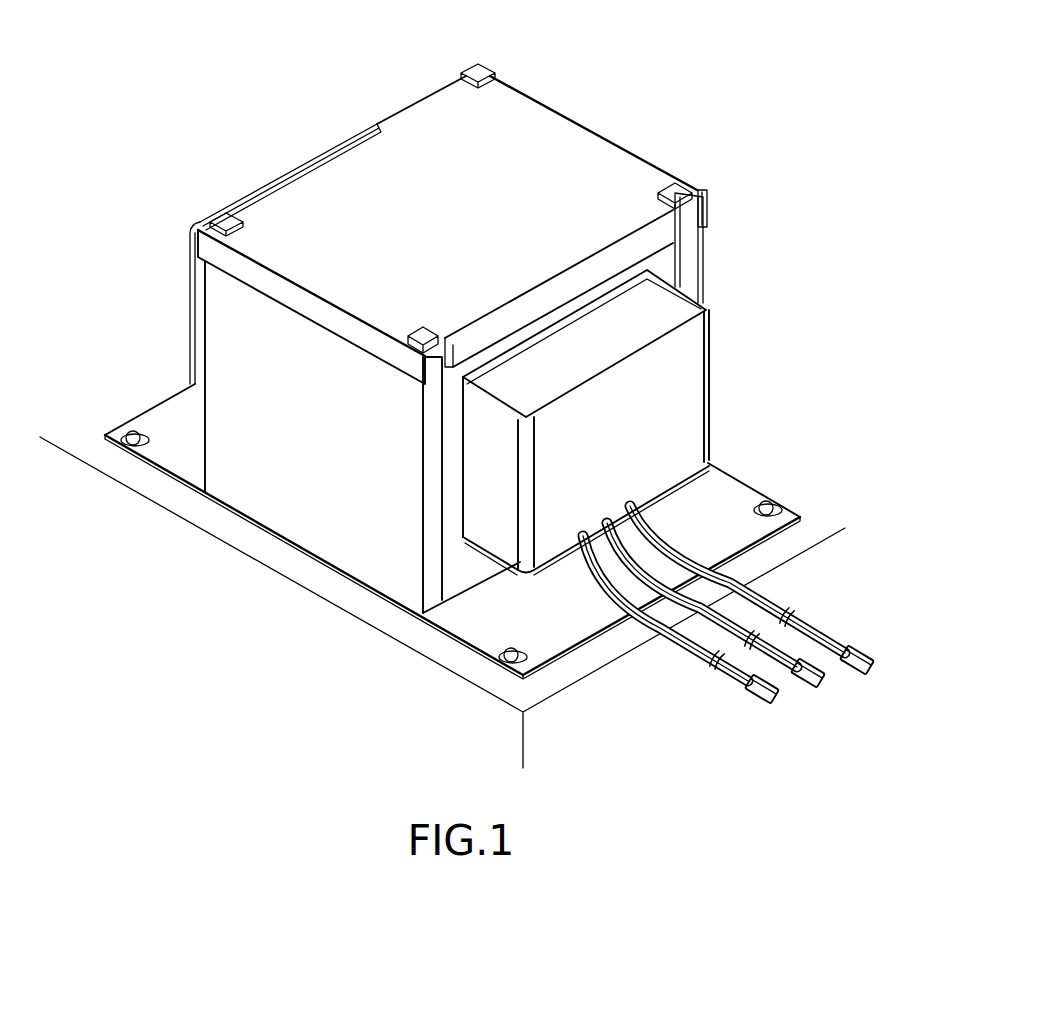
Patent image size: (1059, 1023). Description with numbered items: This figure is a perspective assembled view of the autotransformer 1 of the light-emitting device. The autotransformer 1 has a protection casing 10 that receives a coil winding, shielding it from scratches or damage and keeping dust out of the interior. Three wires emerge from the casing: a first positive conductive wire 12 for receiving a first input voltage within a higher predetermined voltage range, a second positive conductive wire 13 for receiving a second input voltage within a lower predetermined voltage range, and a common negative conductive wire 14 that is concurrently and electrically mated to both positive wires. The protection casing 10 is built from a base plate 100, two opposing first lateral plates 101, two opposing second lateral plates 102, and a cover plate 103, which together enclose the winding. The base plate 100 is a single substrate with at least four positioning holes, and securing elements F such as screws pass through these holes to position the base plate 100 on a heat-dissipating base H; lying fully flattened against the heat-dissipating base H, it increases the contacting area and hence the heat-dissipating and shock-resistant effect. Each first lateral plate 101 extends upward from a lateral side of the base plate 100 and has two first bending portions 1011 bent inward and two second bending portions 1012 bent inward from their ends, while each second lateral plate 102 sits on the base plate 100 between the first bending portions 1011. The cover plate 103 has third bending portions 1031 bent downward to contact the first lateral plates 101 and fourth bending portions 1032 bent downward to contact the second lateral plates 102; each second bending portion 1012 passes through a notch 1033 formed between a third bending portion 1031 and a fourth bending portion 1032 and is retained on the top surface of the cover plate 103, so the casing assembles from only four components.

The autotransformer 1 is at (716, 53).
The protection casing 10 is at (113, 553).
The base plate 100 is at (471, 531).
The first lateral plate 101 is at (448, 414).
The first bending portion 1011 is at (433, 492).
The second bending portion 1012 is at (420, 328).
The second lateral plate 102 is at (490, 445).
The cover plate 103 is at (449, 323).
The third bending portion 1031 is at (255, 277).
The fourth bending portion 1032 is at (643, 248).
The notch 1033 is at (453, 357).
The first positive conductive wire 12 is at (745, 703).
The second positive conductive wire 13 is at (791, 682).
The common negative conductive wire 14 is at (838, 672).
The securing element F is at (784, 494).
The heat-dissipating base H is at (565, 688).